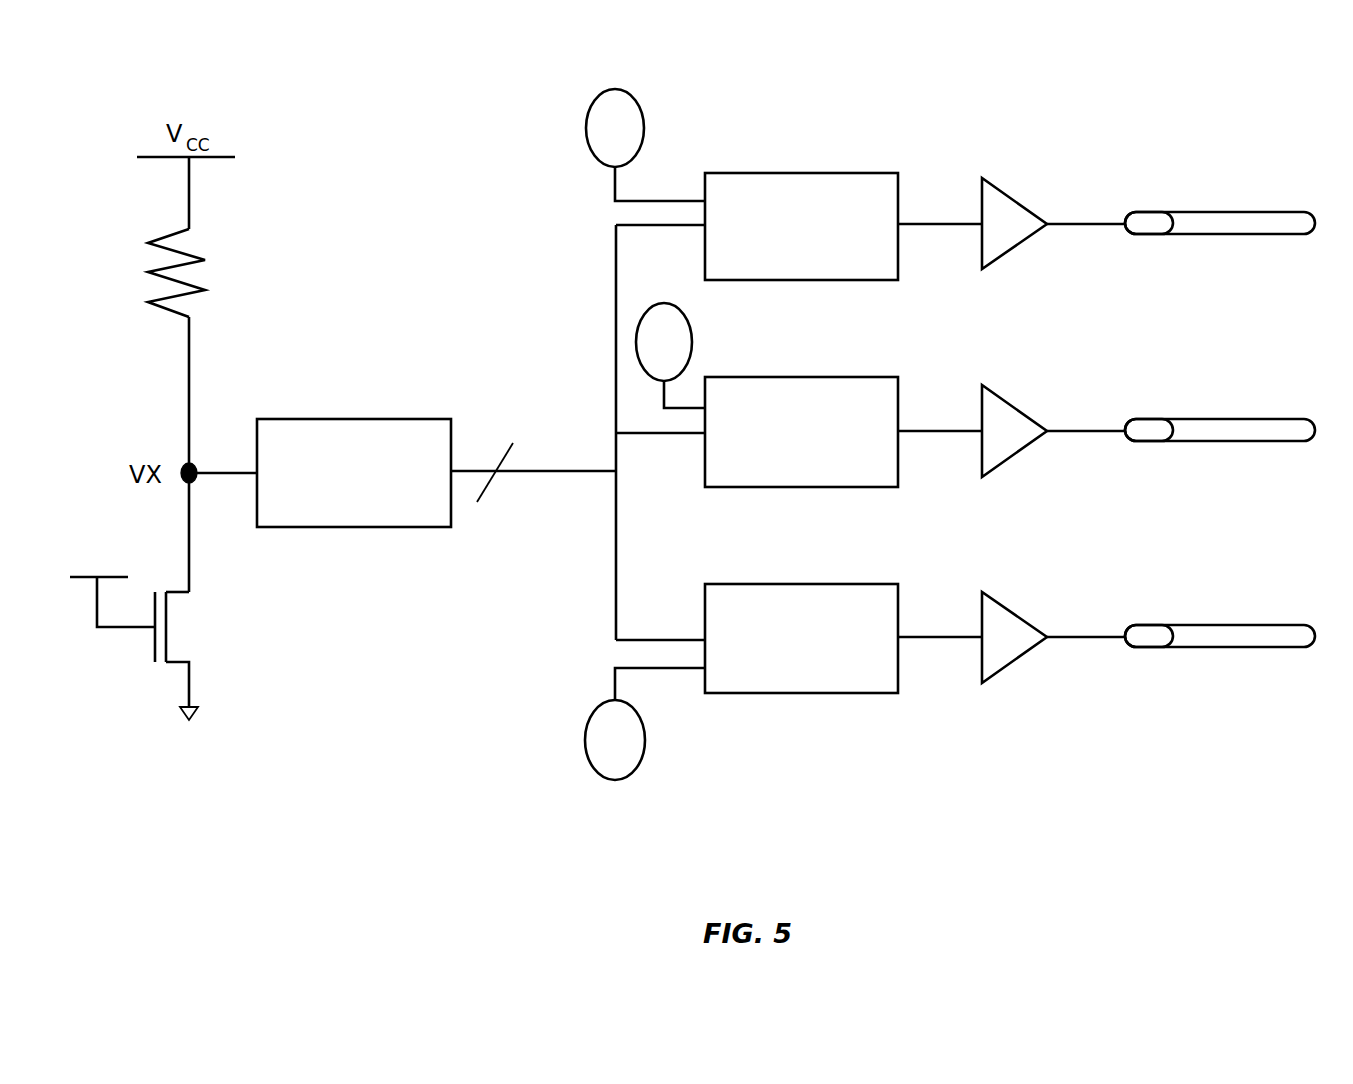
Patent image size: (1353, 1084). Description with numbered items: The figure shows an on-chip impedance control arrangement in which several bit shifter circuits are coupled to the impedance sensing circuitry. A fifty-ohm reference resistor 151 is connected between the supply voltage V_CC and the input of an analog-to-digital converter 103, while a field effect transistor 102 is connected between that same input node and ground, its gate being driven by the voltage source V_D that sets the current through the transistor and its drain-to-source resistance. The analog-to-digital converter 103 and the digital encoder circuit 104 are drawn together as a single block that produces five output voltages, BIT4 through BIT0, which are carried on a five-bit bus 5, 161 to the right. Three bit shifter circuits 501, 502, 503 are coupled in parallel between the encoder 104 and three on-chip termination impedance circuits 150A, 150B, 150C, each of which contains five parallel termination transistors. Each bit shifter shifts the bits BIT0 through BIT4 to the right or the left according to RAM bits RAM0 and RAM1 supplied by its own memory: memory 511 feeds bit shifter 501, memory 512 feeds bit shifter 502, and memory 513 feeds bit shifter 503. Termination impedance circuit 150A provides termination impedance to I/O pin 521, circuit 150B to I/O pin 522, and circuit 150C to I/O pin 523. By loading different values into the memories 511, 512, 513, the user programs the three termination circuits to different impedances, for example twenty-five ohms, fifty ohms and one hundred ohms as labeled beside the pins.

The reference resistor 151 is at (190, 253).
The field effect transistor 102 is at (155, 648).
The analog-to-digital converter 103 is at (354, 473).
The digital encoder circuit 104 is at (354, 473).
The 5-bit bus width 5 is at (495, 460).
The bus 161 is at (578, 432).
The memory 511 is at (639, 105).
The memory 512 is at (690, 327).
The memory 513 is at (642, 752).
The bit shifter circuit 501 is at (820, 173).
The bit shifter circuit 502 is at (820, 377).
The bit shifter circuit 503 is at (820, 584).
The on-chip termination impedance circuit 150A is at (1005, 195).
The on-chip termination impedance circuit 150B is at (1005, 400).
The on-chip termination impedance circuit 150C is at (1005, 607).
The I/O pin 521 is at (1135, 212).
The I/O pin 522 is at (1135, 419).
The I/O pin 523 is at (1135, 625).